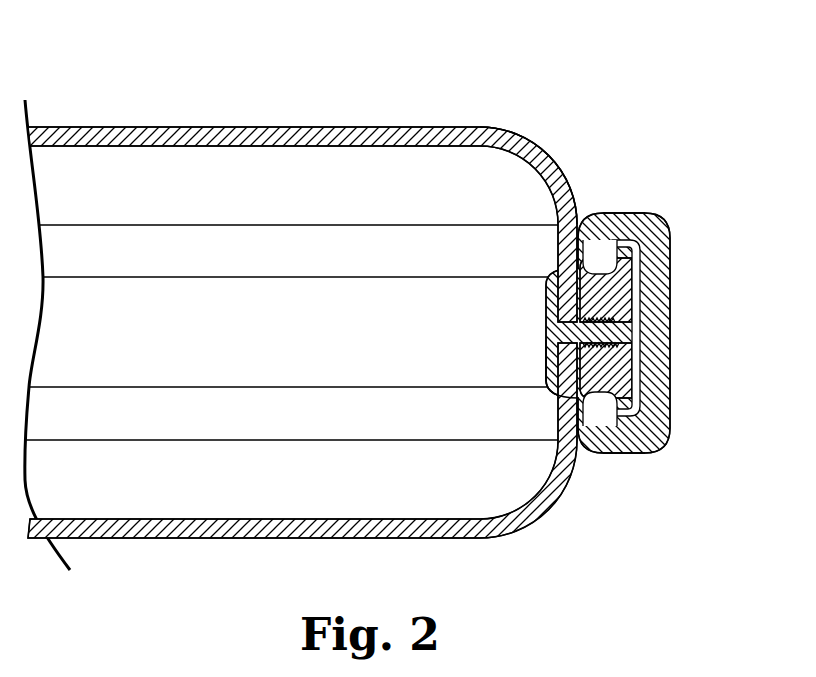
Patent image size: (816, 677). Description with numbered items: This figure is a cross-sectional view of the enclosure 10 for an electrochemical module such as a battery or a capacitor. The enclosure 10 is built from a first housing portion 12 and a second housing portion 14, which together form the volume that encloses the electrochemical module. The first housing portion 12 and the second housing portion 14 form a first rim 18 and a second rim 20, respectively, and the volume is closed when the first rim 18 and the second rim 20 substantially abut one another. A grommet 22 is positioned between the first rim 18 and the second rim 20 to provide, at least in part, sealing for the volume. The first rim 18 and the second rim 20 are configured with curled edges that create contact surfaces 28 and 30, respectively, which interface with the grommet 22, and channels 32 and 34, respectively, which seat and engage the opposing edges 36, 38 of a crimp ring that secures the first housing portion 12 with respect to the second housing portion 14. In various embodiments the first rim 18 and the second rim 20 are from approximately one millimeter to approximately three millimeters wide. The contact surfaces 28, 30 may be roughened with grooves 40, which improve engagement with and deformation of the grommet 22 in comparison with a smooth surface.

The enclosure 10 is at (400, 76).
The first housing portion 12 is at (104, 128).
The second housing portion 14 is at (146, 540).
The first rim 18 is at (610, 292).
The second rim 20 is at (625, 403).
The grommet 22 is at (628, 333).
The contact surface 28 is at (565, 178).
The contact surface 30 is at (580, 405).
The channel 32 is at (608, 249).
The channel 34 is at (614, 414).
The opposing edge of crimp ring 36 is at (610, 242).
The opposing edge of crimp ring 38 is at (616, 453).
The grooves 40 is at (625, 315).